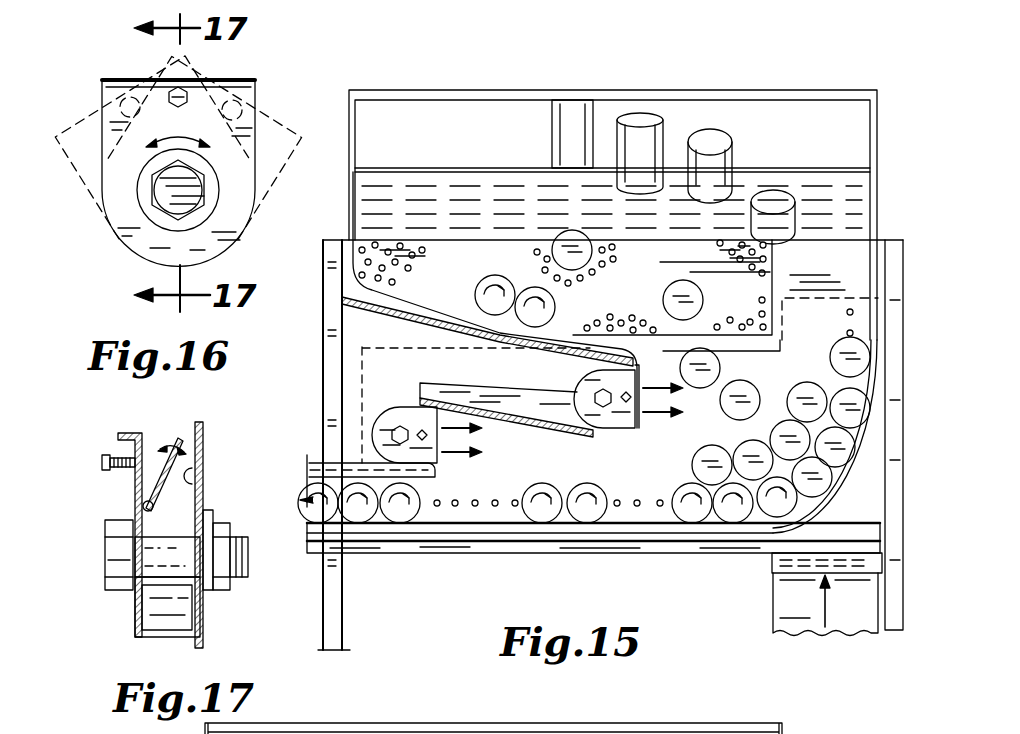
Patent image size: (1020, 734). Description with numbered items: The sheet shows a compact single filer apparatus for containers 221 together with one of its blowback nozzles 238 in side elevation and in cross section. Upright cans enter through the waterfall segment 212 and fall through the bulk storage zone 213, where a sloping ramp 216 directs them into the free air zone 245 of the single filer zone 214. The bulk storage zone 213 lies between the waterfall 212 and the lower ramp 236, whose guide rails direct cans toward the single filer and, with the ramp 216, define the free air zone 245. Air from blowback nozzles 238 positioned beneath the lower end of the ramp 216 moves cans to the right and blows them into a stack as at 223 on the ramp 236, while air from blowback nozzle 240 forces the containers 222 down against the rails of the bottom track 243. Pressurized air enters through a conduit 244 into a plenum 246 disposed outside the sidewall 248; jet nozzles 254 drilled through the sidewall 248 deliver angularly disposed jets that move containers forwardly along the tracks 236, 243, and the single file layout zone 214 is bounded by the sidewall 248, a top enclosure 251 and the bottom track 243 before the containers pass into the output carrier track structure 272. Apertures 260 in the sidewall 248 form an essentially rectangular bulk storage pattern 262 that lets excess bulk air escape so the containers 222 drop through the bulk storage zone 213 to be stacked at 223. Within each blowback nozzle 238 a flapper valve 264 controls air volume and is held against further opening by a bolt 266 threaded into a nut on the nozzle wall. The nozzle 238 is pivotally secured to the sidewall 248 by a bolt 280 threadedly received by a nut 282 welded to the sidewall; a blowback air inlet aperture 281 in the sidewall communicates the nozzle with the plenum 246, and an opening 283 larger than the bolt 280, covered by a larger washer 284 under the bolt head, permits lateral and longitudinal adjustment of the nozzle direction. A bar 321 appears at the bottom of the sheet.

In FIG. 15, the waterfall segment or zone 212 is at (847, 122).
In FIG. 15, the bulk storage zone 213 is at (618, 295).
In FIG. 15, the single filer zone 214 is at (540, 458).
In FIG. 15, the sloping ramp 216 is at (433, 317).
In FIG. 15, the containers 221 is at (641, 112).
In FIG. 15, the containers 222 is at (570, 250).
In FIG. 15, the stack of cans 223 is at (783, 433).
In FIG. 15, the lower ramp 236 is at (813, 510).
In FIG. 16, the blowback nozzle 238 is at (290, 128).
In FIG. 17, the blowback nozzle 238 is at (131, 622).
In FIG. 15, the blowback nozzle 238 is at (617, 421).
In FIG. 15, the blowback nozzle 240 is at (403, 420).
In FIG. 15, the bottom track 243 is at (662, 548).
In FIG. 15, the conduit 244 is at (783, 597).
In FIG. 15, the free air zone 245 is at (687, 436).
In FIG. 15, the plenum 246 is at (360, 363).
In FIG. 15, the sidewall 248 is at (347, 262).
In FIG. 15, the top enclosure 251 is at (518, 413).
In FIG. 15, the jet nozzles 254 is at (853, 333).
In FIG. 15, the apertures 260 is at (405, 247).
In FIG. 15, the bulk storage pattern 262 is at (774, 271).
In FIG. 17, the flapper valve 264 is at (172, 440).
In FIG. 16, the bolt 266 is at (165, 80).
In FIG. 17, the bolt 266 is at (105, 458).
In FIG. 15, the output carrier track structure 272 is at (312, 460).
In FIG. 16, the bolt 280 is at (152, 212).
In FIG. 17, the bolt 280 is at (112, 528).
In FIG. 17, the blowback air inlet aperture 281 is at (204, 501).
In FIG. 17, the nut 282 is at (222, 596).
In FIG. 17, the opening 283 is at (190, 477).
In FIG. 16, the washer 284 is at (170, 198).
In FIG. 17, the washer 284 is at (130, 600).
In FIG. 15, the bar 321 is at (493, 732).